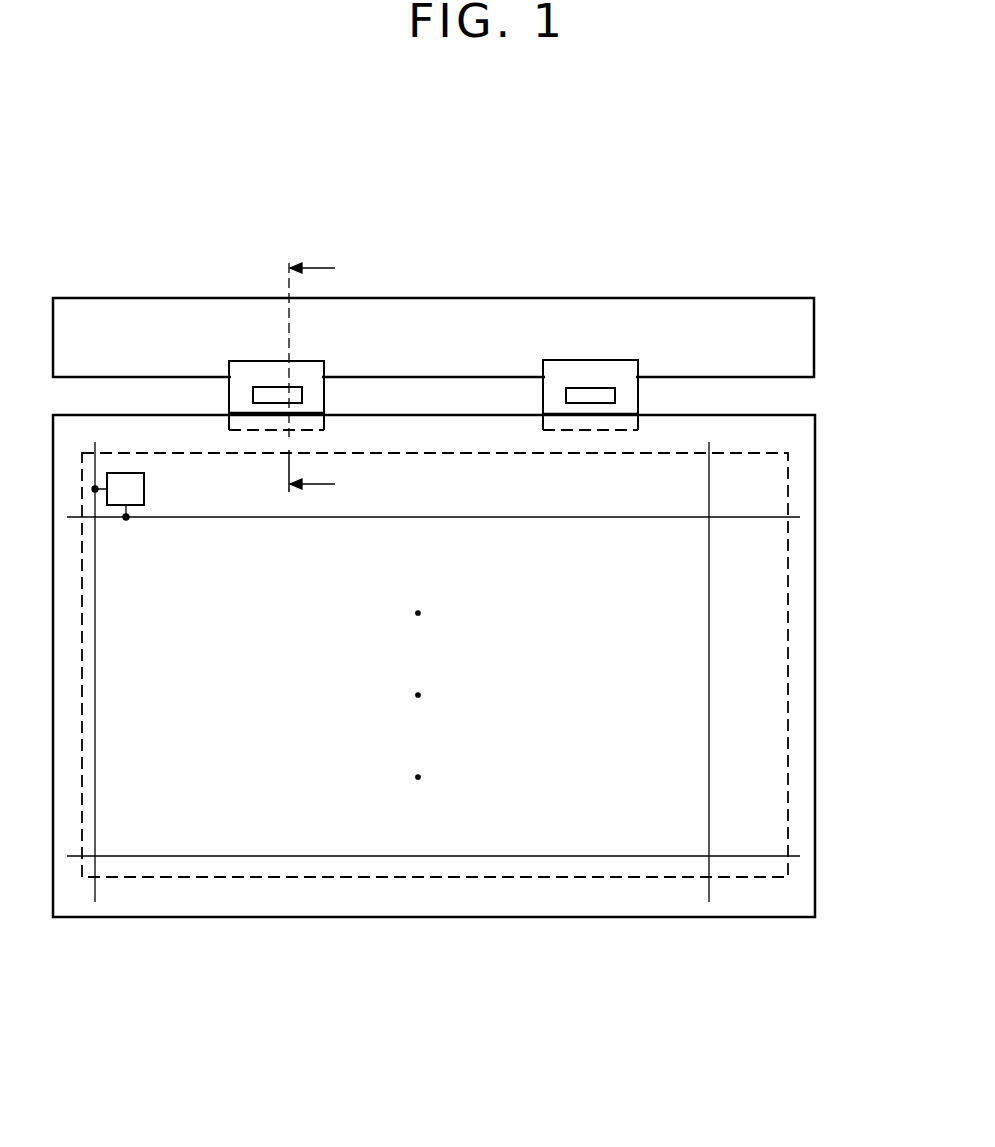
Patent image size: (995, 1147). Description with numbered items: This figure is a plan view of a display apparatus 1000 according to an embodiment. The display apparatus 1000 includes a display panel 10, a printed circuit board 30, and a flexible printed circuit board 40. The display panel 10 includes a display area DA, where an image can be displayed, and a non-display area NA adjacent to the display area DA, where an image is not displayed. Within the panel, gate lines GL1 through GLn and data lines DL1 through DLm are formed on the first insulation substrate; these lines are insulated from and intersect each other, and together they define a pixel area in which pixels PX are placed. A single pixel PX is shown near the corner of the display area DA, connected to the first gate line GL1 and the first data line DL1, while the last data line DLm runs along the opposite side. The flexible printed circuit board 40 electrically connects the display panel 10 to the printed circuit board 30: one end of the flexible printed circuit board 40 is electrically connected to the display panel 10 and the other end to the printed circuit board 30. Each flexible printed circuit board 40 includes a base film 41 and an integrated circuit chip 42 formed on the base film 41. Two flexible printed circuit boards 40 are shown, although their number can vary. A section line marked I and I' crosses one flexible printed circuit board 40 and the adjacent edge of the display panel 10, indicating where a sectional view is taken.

The display apparatus 1000 is at (718, 237).
The printed circuit board 30 is at (814, 335).
The flexible printed circuit board 40 is at (198, 243).
The base film 41 is at (277, 368).
The integrated circuit chip 42 is at (262, 393).
The display panel 10 is at (815, 645).
The pixel PX is at (144, 489).
The gate line GL1 is at (527, 517).
The gate line GLn is at (527, 855).
The data line DL1 is at (95, 695).
The data line DLm is at (709, 694).
The non-display area NA is at (367, 898).
The display area DA is at (485, 878).
The section line I is at (319, 346).
The section line I' is at (321, 474).